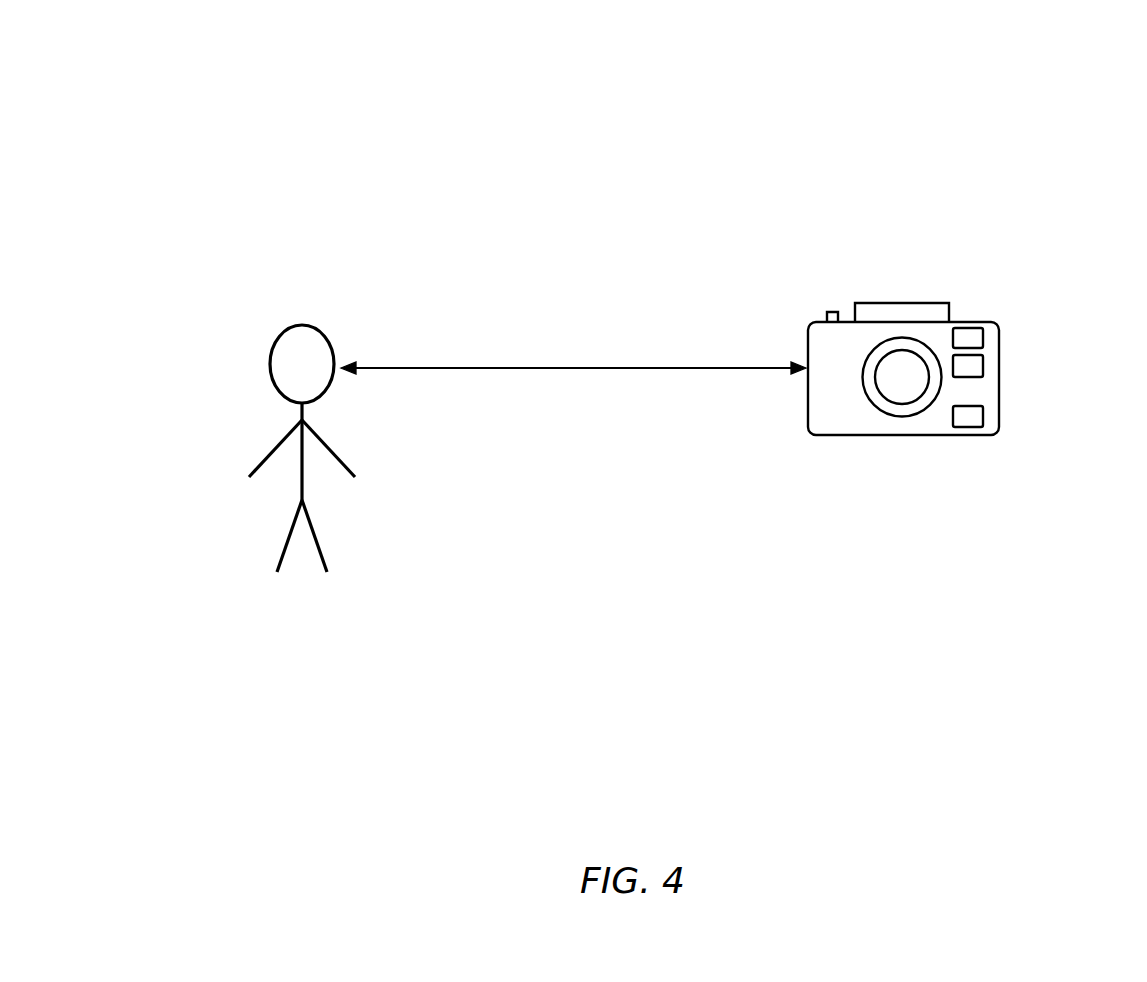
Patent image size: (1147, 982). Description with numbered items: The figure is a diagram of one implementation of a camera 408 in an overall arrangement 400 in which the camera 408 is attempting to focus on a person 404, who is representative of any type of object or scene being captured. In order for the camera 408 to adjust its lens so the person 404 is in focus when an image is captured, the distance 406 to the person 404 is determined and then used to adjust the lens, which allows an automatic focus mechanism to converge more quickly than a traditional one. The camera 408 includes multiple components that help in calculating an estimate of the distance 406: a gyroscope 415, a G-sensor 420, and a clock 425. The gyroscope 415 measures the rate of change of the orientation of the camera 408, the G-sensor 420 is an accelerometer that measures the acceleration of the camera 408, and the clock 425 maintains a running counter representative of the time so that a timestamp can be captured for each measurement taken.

The system 400 is at (1079, 92).
The person 404 is at (270, 366).
The distance 406 is at (699, 350).
The camera 408 is at (942, 382).
The gyroscope 415 is at (972, 328).
The G-sensor 420 is at (985, 362).
The clock 425 is at (968, 430).